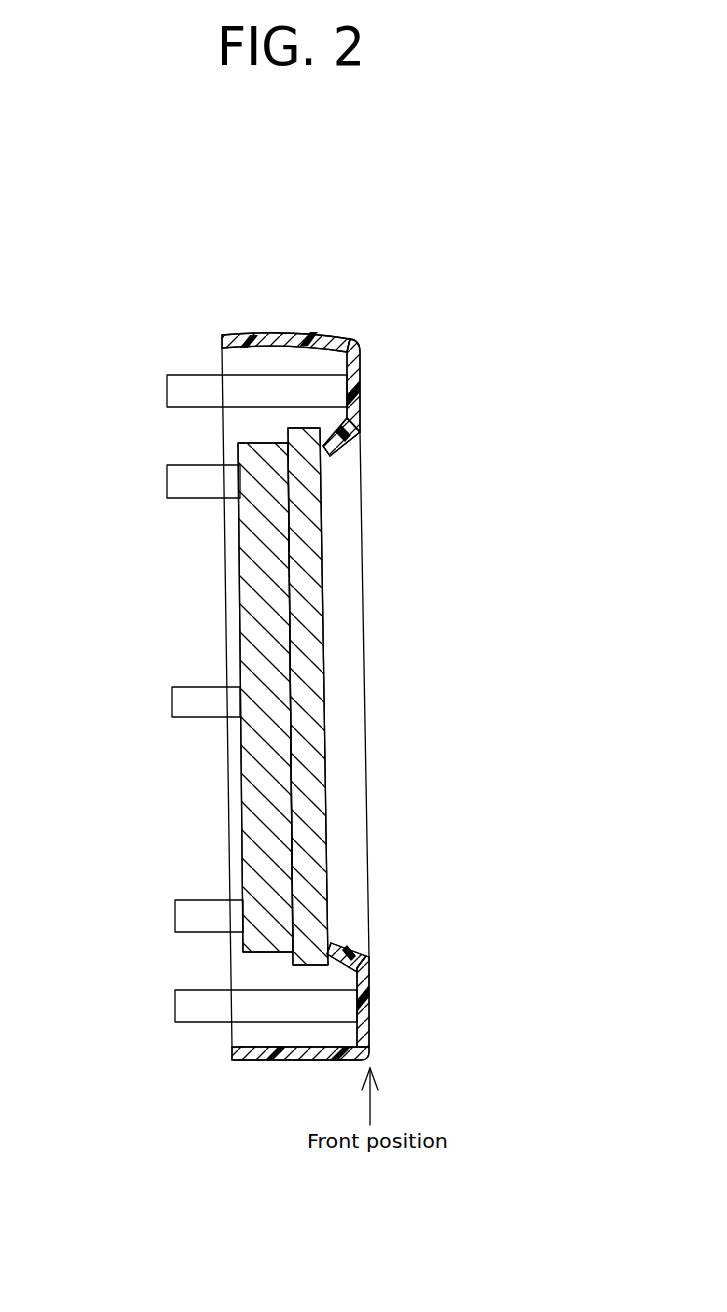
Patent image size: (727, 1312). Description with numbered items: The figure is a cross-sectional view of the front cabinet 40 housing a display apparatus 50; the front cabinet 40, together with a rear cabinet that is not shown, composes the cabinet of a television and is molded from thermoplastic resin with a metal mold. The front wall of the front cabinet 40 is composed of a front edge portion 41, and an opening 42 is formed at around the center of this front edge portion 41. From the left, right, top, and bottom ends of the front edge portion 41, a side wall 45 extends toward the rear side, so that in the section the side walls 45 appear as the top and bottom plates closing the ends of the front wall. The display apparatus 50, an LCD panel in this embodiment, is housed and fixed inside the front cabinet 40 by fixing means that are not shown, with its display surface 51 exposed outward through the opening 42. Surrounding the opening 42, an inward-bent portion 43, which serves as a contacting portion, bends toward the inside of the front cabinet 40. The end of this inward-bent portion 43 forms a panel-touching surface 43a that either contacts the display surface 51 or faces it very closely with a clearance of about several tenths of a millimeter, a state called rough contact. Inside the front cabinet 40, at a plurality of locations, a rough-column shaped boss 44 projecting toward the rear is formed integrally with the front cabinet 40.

The front cabinet 40 is at (349, 343).
The front edge portion 41 is at (362, 395).
The opening 42 is at (364, 733).
The inward-bent portion 43 is at (339, 437).
The panel-touching surface 43a is at (322, 455).
The boss 44 is at (167, 392).
The side wall 45 is at (282, 335).
The display apparatus 50 is at (283, 437).
The display surface 51 is at (325, 637).